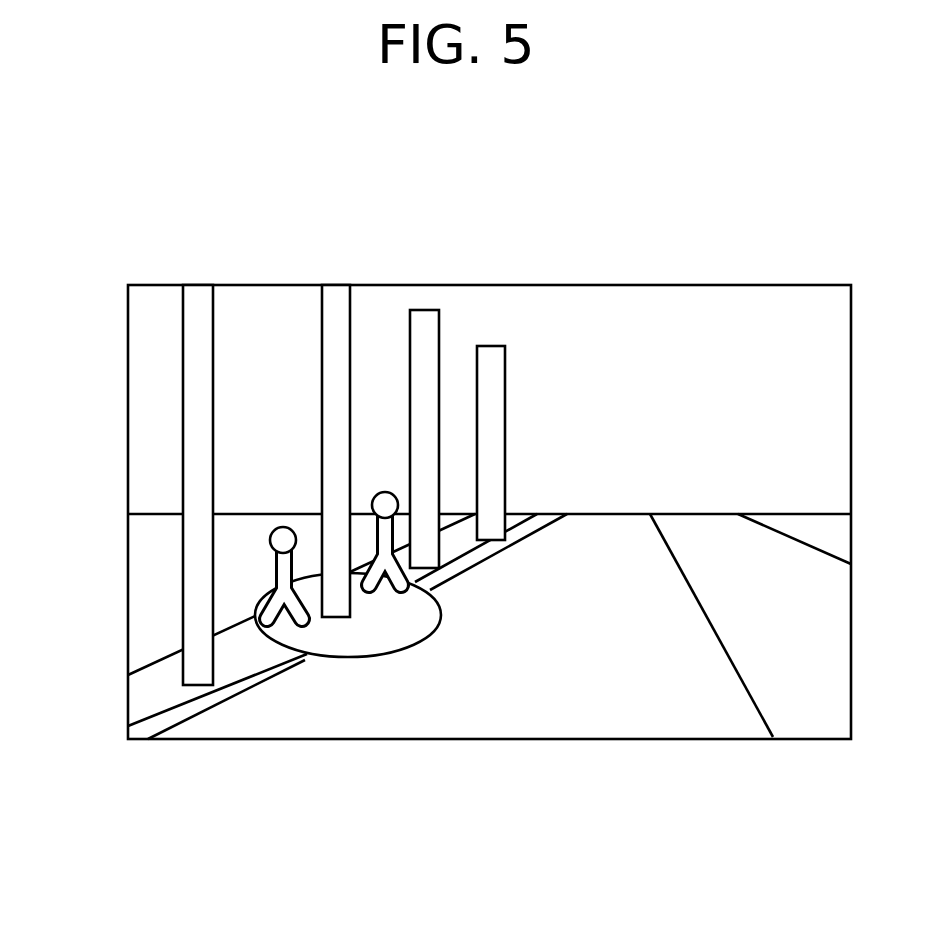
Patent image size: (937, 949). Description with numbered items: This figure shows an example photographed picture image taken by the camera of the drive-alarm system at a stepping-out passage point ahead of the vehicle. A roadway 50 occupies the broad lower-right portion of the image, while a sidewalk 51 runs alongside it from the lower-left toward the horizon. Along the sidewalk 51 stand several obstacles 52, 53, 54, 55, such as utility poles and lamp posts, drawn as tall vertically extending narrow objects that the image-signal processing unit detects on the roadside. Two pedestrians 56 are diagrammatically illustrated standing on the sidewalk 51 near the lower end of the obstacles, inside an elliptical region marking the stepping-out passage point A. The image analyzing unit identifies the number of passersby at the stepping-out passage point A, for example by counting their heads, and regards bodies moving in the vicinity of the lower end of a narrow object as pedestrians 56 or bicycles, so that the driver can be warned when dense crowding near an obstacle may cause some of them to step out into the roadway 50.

The roadway 50 is at (457, 706).
The sidewalk 51 is at (177, 678).
The obstacle 52 is at (488, 358).
The obstacle 53 is at (421, 320).
The obstacle 54 is at (333, 300).
The obstacle 55 is at (195, 300).
The pedestrians 56 is at (367, 612).
The stepping-out passage point A is at (388, 640).